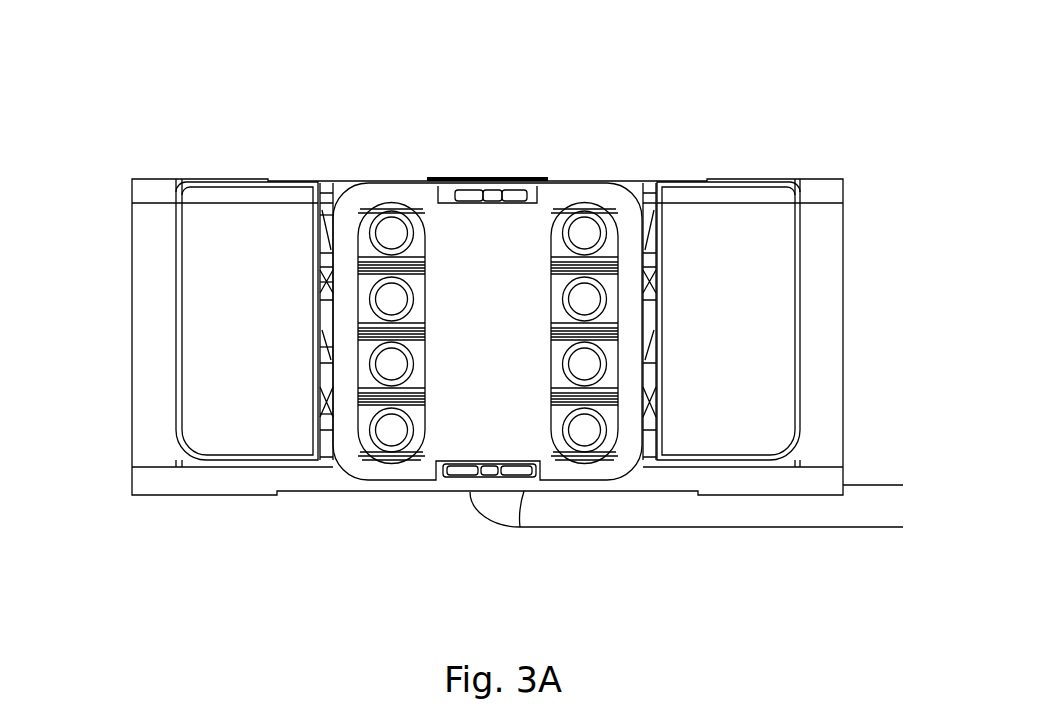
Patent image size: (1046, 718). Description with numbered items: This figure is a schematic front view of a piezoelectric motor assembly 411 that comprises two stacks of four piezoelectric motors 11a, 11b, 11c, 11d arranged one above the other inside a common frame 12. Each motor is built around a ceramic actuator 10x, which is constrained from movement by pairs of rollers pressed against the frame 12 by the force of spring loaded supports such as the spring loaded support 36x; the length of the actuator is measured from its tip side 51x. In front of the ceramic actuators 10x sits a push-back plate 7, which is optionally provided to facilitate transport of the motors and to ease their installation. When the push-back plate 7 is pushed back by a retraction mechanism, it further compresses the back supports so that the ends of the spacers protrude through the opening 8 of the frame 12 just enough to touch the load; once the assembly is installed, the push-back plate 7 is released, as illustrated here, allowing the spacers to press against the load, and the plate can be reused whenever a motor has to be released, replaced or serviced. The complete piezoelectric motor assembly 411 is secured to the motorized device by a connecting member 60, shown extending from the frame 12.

The piezoelectric motor assembly 411 is at (102, 93).
The frame 12 is at (845, 233).
The connecting member 60 is at (876, 485).
The push-back plate 7 is at (382, 183).
The opening 8 is at (327, 183).
The ceramic actuator 10x is at (560, 228).
The tip side 51x is at (587, 207).
The spring loaded support 36x is at (601, 203).
The piezoelectric motor 11a is at (320, 218).
The piezoelectric motor 11b is at (320, 283).
The piezoelectric motor 11c is at (320, 348).
The piezoelectric motor 11d is at (320, 415).